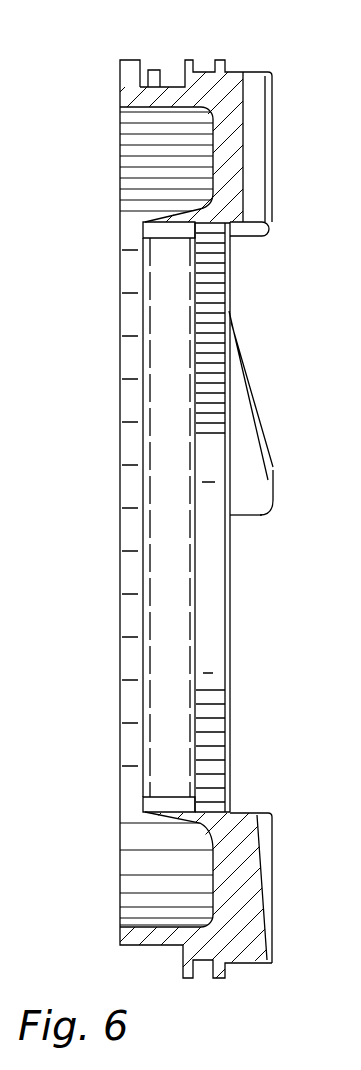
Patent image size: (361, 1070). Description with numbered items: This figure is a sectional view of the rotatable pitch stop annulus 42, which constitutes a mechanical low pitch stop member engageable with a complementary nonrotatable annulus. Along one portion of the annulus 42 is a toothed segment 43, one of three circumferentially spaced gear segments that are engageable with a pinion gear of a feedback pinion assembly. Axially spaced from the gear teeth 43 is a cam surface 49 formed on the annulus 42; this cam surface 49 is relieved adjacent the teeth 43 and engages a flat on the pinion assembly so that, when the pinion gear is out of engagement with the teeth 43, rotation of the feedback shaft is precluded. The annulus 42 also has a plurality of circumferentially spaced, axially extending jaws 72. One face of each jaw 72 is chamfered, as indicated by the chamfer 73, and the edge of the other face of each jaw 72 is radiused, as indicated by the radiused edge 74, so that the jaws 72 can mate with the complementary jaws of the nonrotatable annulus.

The rotatable annulus 42 is at (120, 703).
The toothed segment 43 is at (130, 72).
The cam surface 49 is at (153, 70).
The jaw 72 is at (272, 142).
The chamfer 73 is at (252, 188).
The radiused edge 74 is at (268, 236).